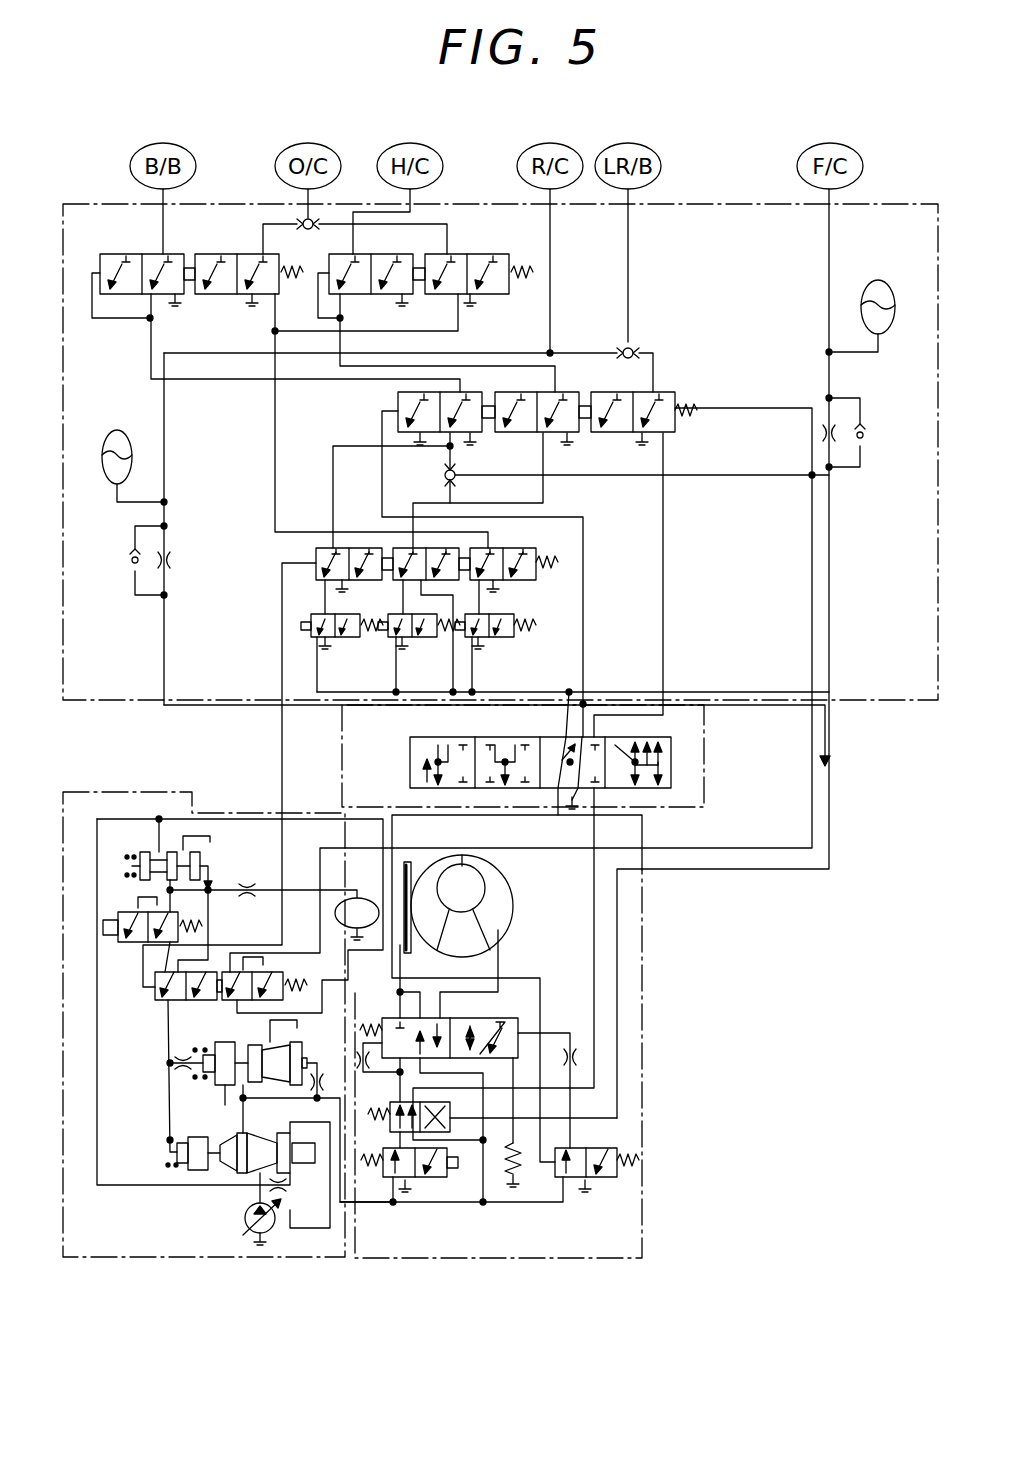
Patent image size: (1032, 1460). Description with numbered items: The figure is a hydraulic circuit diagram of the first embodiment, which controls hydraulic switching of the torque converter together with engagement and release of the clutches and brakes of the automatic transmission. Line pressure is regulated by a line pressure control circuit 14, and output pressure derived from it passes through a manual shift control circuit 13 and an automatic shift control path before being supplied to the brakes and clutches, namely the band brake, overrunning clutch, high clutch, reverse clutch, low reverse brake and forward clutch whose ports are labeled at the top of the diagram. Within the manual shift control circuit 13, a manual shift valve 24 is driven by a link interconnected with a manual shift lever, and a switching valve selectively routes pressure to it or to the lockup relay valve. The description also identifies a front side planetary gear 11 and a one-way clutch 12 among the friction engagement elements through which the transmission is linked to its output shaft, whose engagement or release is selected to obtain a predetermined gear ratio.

The front side planetary gear 11 is at (110, 1258).
The one-way clutch 12 is at (440, 1258).
The manual shift control circuit 13 is at (704, 807).
The line pressure control circuit 14 is at (888, 700).
The manual shift valve 24 is at (410, 764).